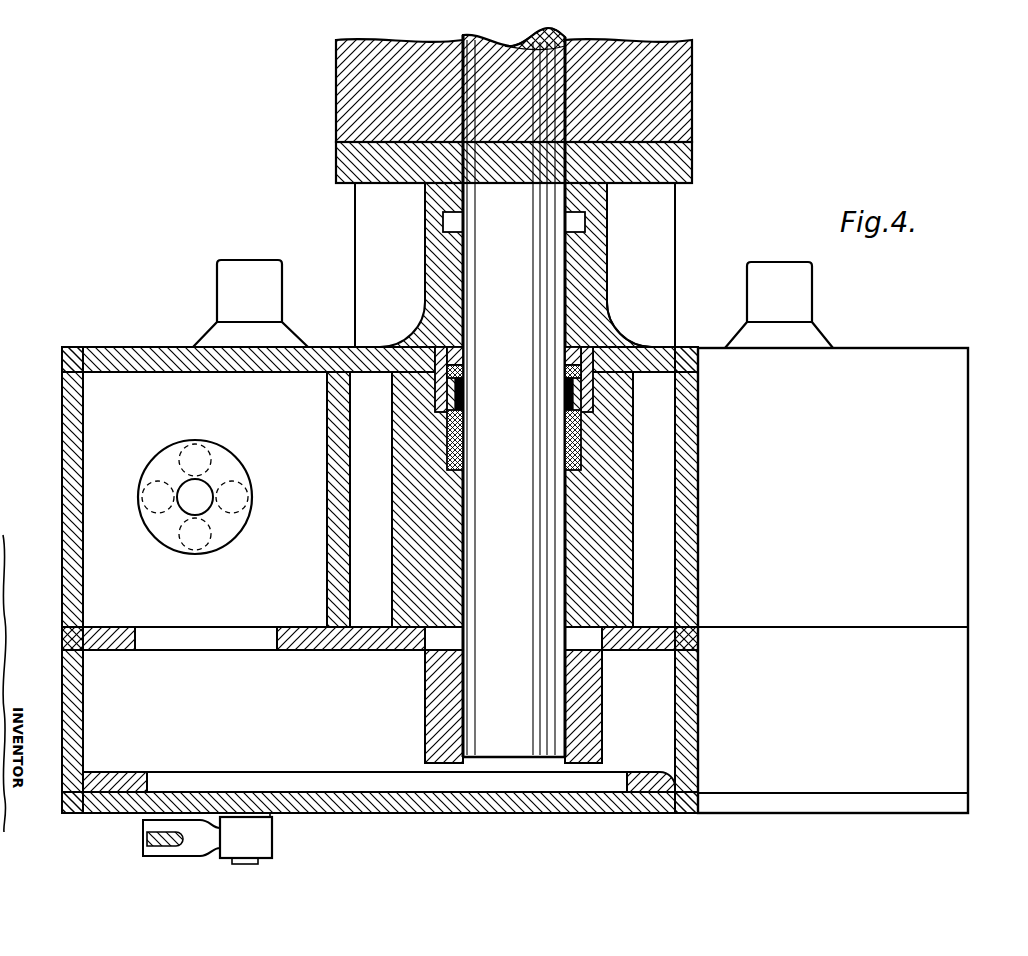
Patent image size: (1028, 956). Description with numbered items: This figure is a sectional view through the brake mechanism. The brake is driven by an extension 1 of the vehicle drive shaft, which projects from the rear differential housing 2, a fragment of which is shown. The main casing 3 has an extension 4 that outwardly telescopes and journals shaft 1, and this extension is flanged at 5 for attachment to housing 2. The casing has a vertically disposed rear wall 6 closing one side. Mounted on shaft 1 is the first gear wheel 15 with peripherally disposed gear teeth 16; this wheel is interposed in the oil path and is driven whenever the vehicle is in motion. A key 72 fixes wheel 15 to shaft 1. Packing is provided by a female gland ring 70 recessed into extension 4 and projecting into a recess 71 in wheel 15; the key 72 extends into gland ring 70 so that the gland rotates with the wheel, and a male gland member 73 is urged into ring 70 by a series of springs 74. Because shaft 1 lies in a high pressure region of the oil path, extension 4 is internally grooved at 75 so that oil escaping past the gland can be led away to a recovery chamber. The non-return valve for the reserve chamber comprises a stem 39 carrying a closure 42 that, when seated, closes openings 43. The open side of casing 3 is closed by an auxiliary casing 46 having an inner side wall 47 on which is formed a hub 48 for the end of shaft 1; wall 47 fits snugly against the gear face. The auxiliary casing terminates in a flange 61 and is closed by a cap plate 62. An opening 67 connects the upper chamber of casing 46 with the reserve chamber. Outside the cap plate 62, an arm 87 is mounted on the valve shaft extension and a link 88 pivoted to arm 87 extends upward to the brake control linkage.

The extension of the drive shaft 1 is at (520, 305).
The rear differential housing 2 is at (660, 105).
The main casing 3 is at (985, 370).
The extension 4 is at (590, 205).
The flange 5 is at (665, 167).
The rear wall 6 is at (158, 347).
The first gear wheel 15 is at (620, 472).
The gear teeth 16 is at (655, 522).
The stem 39 is at (197, 495).
The closure 42 is at (160, 520).
The openings 43 is at (175, 470).
The auxiliary casing 46 is at (940, 700).
The inner side wall 47 is at (305, 650).
The hub 48 is at (435, 693).
The flange 61 is at (118, 772).
The cap plate 62 is at (460, 813).
The opening 67 is at (222, 630).
The female gland ring 70 is at (600, 348).
The recess 71 is at (435, 400).
The key 72 is at (355, 287).
The male gland member 73 is at (593, 400).
The springs 74 is at (455, 455).
The groove 75 is at (443, 222).
The arm 87 is at (143, 830).
The link 88 is at (147, 842).